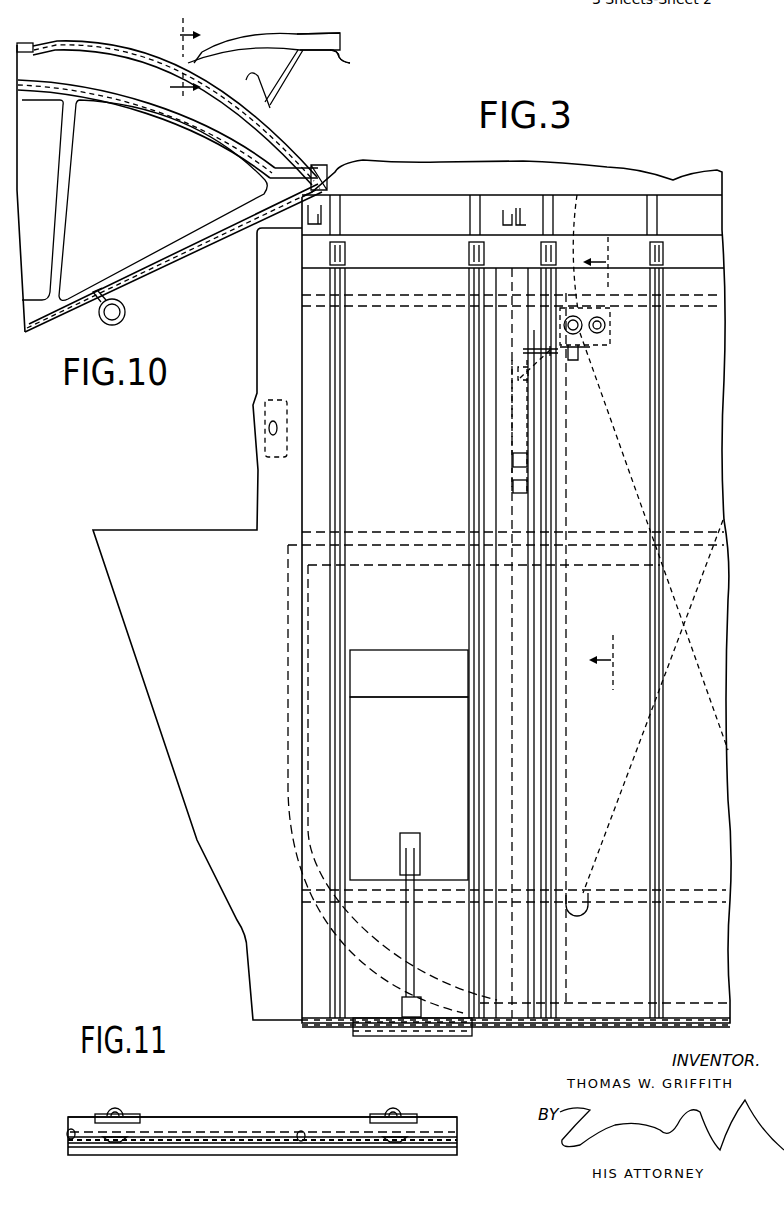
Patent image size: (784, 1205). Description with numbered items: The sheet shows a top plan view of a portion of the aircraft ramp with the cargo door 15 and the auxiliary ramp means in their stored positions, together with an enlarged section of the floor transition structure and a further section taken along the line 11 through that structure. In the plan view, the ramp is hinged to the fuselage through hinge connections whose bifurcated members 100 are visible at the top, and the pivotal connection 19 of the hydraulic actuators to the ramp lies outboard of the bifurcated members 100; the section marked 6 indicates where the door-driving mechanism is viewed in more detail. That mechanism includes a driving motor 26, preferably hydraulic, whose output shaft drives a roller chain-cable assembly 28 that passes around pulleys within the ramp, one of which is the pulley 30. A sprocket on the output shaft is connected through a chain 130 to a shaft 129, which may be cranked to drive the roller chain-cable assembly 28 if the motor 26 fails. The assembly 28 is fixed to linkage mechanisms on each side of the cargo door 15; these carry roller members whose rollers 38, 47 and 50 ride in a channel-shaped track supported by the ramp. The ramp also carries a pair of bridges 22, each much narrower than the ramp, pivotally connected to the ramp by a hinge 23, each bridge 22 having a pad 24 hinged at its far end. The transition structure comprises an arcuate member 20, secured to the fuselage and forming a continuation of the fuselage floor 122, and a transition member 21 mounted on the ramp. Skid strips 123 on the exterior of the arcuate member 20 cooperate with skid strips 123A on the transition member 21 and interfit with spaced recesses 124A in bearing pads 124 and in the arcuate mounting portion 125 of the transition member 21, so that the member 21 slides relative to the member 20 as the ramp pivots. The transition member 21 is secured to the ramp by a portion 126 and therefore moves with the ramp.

In FIG. 3, the bifurcated members 100 is at (320, 215).
In FIG. 3, the driving motor 26 is at (578, 237).
In FIG. 3, the section line 6 is at (608, 463).
In FIG. 3, the chain 130 is at (602, 313).
In FIG. 3, the shaft 129 is at (600, 333).
In FIG. 3, the roller 38 is at (518, 373).
In FIG. 3, the roller 47 is at (515, 460).
In FIG. 3, the roller 50 is at (515, 488).
In FIG. 3, the roller chain-cable assembly 28 is at (604, 414).
In FIG. 3, the pulley 30 is at (579, 893).
In FIG. 3, the connection of hydraulic actuator to ramp 19 is at (270, 440).
In FIG. 3, the extensible cargo door 15 is at (284, 765).
In FIG. 3, the pad 24 is at (427, 688).
In FIG. 3, the bridges 22 is at (427, 767).
In FIG. 3, the hinge 23 is at (378, 1040).
In FIG. 10, the floor 122 is at (27, 45).
In FIG. 10, the skid strips 123 is at (116, 44).
In FIG. 11, the skid strips 123 is at (115, 1143).
In FIG. 10, the arcuate mounting portion 125 is at (212, 130).
In FIG. 10, the arcuate member 20 is at (323, 157).
In FIG. 11, the arcuate member 20 is at (252, 1155).
In FIG. 10, the transition member 21 is at (294, 75).
In FIG. 11, the transition member 21 is at (236, 1111).
In FIG. 10, the skid strips 123A is at (338, 36).
In FIG. 11, the skid strips 123A is at (122, 1112).
In FIG. 10, the portion 126 is at (349, 64).
In FIG. 10, the bearing pads 124 is at (276, 106).
In FIG. 11, the bearing pads 124 is at (457, 1137).
In FIG. 10, the opening 11 is at (176, 54).
In FIG. 11, the recesses 124A is at (107, 1139).